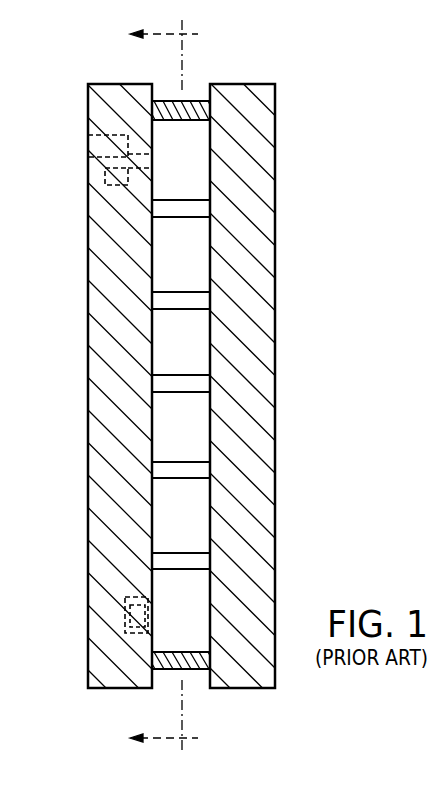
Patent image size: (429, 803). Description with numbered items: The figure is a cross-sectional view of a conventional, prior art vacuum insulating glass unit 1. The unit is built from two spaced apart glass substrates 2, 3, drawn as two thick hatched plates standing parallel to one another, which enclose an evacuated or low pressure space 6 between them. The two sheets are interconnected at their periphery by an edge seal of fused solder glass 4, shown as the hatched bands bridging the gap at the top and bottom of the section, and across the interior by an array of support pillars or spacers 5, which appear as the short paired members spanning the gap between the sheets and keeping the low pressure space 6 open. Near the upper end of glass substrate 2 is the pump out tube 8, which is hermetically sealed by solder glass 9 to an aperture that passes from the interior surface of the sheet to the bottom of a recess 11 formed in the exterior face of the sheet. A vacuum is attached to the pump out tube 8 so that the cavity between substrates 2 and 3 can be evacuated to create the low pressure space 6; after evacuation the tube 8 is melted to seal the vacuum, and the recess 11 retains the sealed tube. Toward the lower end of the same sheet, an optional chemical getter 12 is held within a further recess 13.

The vacuum IG unit 1 is at (290, 166).
The glass substrate 2 is at (87, 433).
The glass substrate 3 is at (250, 322).
The edge seal of fused solder glass 4 is at (193, 107).
The support pillars 5 is at (190, 383).
The low pressure space 6 is at (167, 502).
The pump out tube 8 is at (95, 160).
The solder glass 9 is at (123, 149).
The recess 11 is at (99, 196).
The chemical getter 12 is at (130, 605).
The recess 13 is at (127, 642).